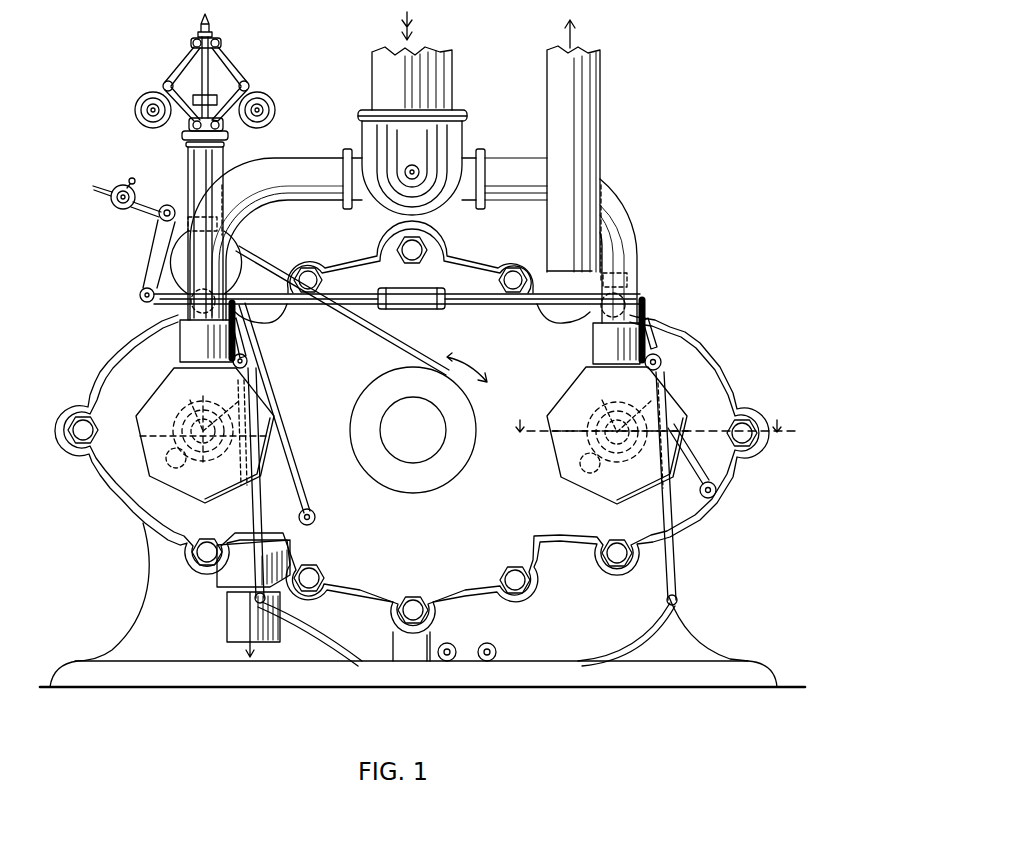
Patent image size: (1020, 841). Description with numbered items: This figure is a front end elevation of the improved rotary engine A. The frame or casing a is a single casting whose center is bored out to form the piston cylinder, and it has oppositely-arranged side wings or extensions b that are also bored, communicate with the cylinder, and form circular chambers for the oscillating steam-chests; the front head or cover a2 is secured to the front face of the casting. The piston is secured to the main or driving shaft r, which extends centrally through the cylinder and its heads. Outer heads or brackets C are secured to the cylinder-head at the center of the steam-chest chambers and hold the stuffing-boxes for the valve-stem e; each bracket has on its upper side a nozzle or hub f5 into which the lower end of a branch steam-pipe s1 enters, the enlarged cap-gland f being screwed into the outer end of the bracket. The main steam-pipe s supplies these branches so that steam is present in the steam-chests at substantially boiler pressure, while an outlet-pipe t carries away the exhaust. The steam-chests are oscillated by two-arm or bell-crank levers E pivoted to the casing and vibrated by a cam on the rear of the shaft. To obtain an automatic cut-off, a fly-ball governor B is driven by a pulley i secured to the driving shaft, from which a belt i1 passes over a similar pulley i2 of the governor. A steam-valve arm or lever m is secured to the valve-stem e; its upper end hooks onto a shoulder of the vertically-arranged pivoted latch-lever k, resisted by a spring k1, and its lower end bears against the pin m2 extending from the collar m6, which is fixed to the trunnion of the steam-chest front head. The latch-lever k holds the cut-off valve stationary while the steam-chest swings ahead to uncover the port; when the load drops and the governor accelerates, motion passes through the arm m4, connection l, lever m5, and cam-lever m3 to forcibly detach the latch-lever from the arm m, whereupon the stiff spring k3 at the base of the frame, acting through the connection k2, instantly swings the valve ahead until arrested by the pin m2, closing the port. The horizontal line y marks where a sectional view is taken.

The frame or casing a is at (148, 580).
The front head or cover a2 is at (120, 487).
The side wing or extension b is at (107, 358).
The outer head or bracket C is at (154, 388).
The cap-gland f is at (150, 408).
The nozzle or hub f5 is at (187, 340).
The valve-stem e is at (140, 436).
The steam-valve arm or lever m is at (410, 429).
The pin m2 is at (166, 460).
The cam-lever m3 is at (246, 336).
The arm m4 is at (157, 238).
The lever m5 is at (277, 324).
The collar m6 is at (580, 385).
The pulley i is at (383, 381).
The main or driving shaft r is at (413, 430).
The belt i1 is at (353, 316).
The governor pulley i2 is at (183, 260).
The connection l is at (463, 300).
The latch-lever k is at (262, 370).
The spring k1 is at (281, 484).
The connection k2 is at (248, 527).
The stiff spring k3 is at (291, 633).
The two-arm or bell-crank lever E is at (386, 227).
The main steam-pipe s is at (381, 74).
The branch steam-pipe s1 is at (279, 167).
The outlet-pipe t is at (558, 87).
The rotary engine A is at (112, 207).
The fly-ball governor B is at (199, 72).
The section line y is at (645, 431).